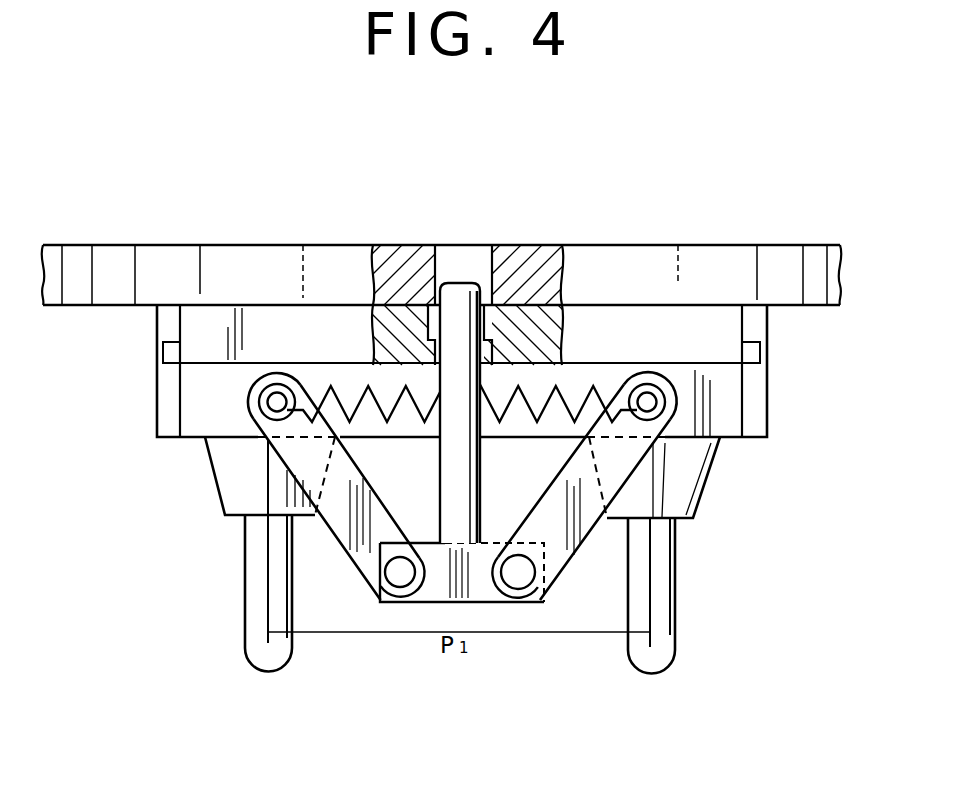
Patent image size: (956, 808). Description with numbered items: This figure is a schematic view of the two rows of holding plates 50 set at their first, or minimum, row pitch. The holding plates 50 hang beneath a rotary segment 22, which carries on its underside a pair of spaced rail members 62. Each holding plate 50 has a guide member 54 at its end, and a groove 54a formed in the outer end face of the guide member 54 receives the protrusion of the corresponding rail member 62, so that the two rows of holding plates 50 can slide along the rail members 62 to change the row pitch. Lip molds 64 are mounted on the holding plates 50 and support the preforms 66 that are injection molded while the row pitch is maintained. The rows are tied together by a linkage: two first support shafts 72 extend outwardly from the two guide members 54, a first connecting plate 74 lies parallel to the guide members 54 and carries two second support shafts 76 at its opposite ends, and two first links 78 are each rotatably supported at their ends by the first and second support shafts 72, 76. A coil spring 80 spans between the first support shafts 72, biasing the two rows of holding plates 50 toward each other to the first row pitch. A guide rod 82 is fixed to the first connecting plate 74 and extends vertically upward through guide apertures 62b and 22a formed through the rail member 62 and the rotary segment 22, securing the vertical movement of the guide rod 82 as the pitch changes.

The rotary segment 22 is at (773, 268).
The guide aperture 22a is at (488, 268).
The holding plate 50 is at (150, 388).
The guide member 54 is at (200, 415).
The groove 54a is at (163, 348).
The rail member 62 is at (220, 313).
The guide aperture 62b is at (522, 303).
The lip mold 64 is at (233, 485).
The preform 66 is at (245, 596).
The first support shaft 72 is at (278, 385).
The first connecting plate 74 is at (480, 588).
The second support shaft 76 is at (397, 578).
The first link 78 is at (337, 517).
The coil spring 80 is at (340, 392).
The guide rod 82 is at (462, 498).